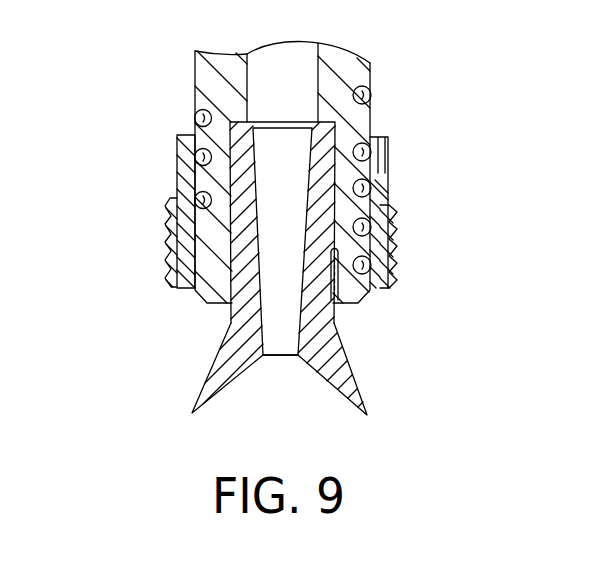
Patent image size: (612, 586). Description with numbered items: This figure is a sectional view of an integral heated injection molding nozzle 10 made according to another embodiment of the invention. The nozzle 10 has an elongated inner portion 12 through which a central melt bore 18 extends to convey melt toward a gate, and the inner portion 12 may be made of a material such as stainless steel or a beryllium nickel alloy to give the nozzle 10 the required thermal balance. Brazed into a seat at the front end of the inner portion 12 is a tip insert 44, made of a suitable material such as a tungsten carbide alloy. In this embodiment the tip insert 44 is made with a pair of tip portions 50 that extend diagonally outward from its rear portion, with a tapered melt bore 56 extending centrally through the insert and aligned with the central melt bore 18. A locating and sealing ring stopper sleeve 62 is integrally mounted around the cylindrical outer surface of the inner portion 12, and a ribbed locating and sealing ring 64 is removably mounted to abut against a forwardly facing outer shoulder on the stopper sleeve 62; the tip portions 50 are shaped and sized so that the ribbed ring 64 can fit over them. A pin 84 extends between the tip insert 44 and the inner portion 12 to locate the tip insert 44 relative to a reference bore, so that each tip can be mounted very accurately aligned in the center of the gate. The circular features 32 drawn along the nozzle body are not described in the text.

The nozzle 10 is at (373, 72).
The elongated inner portion 12 is at (208, 80).
The central melt bore 18 is at (271, 78).
The fastener holes 32 is at (373, 98).
The tip insert 44 is at (325, 206).
The tip portions 50 is at (210, 372).
The melt bore 56 is at (285, 330).
The locating and sealing ring stopper sleeve 62 is at (177, 151).
The ribbed locating and sealing ring 64 is at (169, 243).
The pin 84 is at (345, 299).